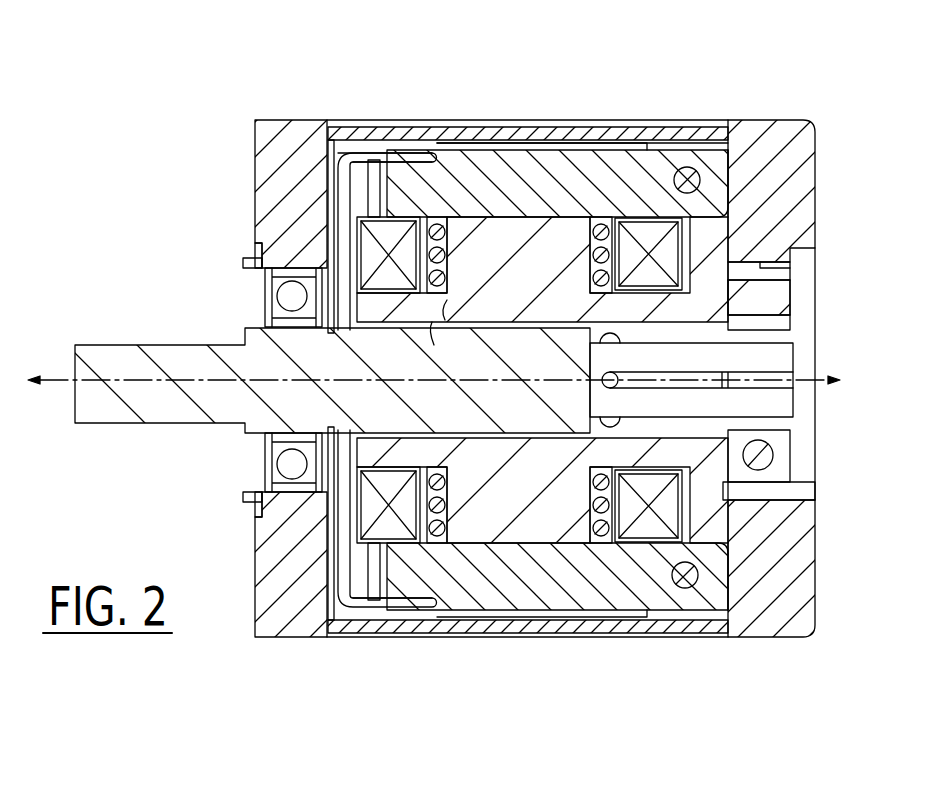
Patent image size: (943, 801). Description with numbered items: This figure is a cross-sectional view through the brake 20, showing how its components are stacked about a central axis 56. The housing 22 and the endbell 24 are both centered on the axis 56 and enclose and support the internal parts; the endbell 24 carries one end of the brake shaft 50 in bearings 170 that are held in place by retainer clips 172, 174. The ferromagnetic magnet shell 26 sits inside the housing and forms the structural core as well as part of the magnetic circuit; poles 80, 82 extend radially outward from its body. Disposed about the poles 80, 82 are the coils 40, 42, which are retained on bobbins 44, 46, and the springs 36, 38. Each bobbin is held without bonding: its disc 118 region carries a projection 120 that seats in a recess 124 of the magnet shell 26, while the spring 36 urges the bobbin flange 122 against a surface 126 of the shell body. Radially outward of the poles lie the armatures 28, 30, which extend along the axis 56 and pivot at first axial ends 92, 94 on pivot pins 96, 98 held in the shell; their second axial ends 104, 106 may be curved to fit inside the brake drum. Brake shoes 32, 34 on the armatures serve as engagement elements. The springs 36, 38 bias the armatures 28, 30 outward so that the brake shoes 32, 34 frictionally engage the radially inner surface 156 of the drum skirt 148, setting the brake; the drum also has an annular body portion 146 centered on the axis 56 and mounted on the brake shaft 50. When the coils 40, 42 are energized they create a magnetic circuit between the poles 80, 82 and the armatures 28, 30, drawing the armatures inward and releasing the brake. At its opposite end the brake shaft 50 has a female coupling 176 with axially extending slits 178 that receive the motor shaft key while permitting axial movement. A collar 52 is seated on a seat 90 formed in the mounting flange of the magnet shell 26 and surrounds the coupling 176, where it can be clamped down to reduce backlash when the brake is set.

The brake 20 is at (105, 180).
The housing 22 is at (475, 626).
The endbell 24 is at (262, 622).
The magnet shell 26 is at (752, 577).
The armature 28 is at (585, 160).
The armature 30 is at (538, 626).
The brake shoe 32 is at (430, 135).
The brake shoe 34 is at (400, 610).
The spring 36 is at (447, 235).
The spring 38 is at (447, 522).
The coil 40 is at (700, 178).
The coil 42 is at (630, 518).
The bobbin 44 is at (650, 255).
The bobbin 46 is at (640, 535).
The brake shaft 50 is at (180, 415).
The collar 52 is at (785, 440).
The axis 56 is at (48, 378).
The pole 80 is at (545, 175).
The pole 82 is at (490, 460).
The seat 90 is at (780, 263).
The first axial end 92 is at (688, 172).
The first axial end 94 is at (690, 600).
The pivot pin 96 is at (722, 168).
The pivot pin 98 is at (700, 590).
The second axial end 104 is at (392, 158).
The second axial end 106 is at (418, 620).
The disc 118 is at (348, 145).
The projection 120 is at (645, 300).
The flange 122 is at (434, 325).
The recess 124 is at (625, 300).
The surface 126 is at (450, 300).
The annular body portion 146 is at (338, 185).
The skirt 148 is at (368, 130).
The radially inner surface 156 is at (352, 612).
The bearings 170 is at (283, 295).
The retainer clip 172 is at (255, 240).
The retainer clip 174 is at (258, 322).
The female coupling 176 is at (727, 366).
The slits 178 is at (640, 376).